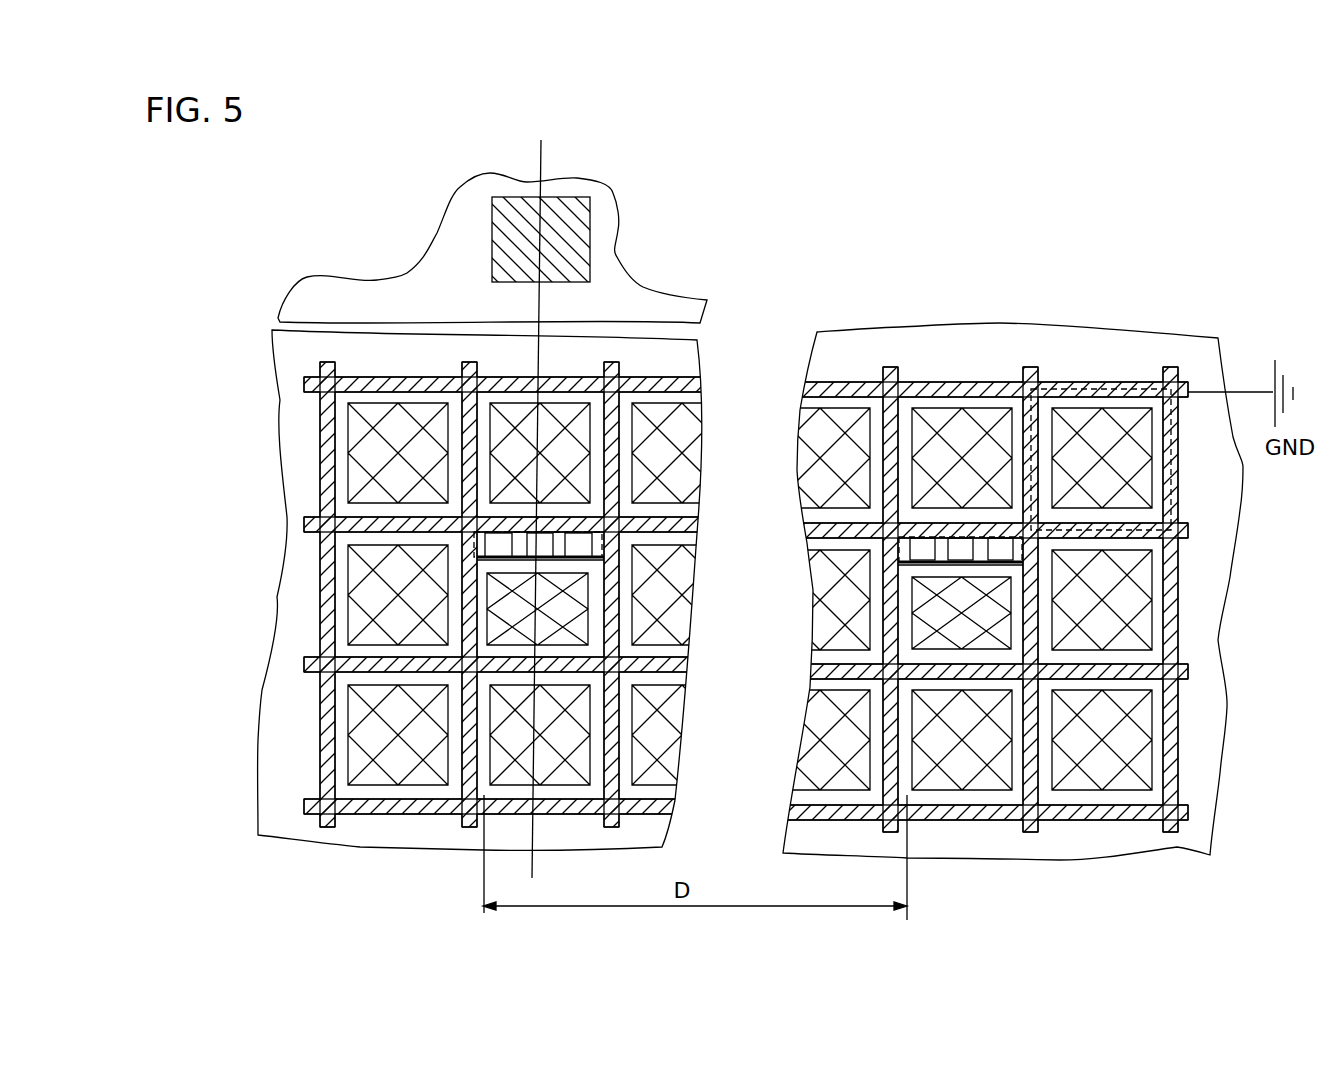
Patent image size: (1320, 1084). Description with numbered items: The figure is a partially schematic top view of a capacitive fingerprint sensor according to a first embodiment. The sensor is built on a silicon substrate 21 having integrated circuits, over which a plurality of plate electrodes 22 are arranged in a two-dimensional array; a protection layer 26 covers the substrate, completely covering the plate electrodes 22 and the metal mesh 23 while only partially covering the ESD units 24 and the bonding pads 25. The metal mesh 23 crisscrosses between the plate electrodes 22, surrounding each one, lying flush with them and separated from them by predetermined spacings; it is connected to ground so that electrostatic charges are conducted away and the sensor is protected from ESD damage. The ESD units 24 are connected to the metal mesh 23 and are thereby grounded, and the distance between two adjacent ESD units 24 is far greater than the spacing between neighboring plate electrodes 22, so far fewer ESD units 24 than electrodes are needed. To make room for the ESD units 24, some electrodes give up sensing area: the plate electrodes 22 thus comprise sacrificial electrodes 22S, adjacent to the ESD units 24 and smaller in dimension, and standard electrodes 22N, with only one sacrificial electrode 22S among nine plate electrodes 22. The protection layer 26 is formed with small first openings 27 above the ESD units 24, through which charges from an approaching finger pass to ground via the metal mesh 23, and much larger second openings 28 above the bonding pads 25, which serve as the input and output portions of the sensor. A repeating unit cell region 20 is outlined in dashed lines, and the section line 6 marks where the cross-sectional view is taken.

The section line 6— 6 is at (542, 868).
The unit cell region 20 is at (1088, 385).
The silicon substrate 21 is at (283, 363).
The protection layer 26 is at (1013, 591).
The plate electrodes 22 is at (181, 527).
The standard electrodes 22N is at (500, 463).
The sacrificial electrodes 22S is at (523, 618).
The metal mesh 23 is at (352, 382).
The ESD units 24 is at (545, 530).
The bonding pads 25 is at (580, 227).
The first openings 27 is at (588, 533).
The second openings 28 is at (493, 217).